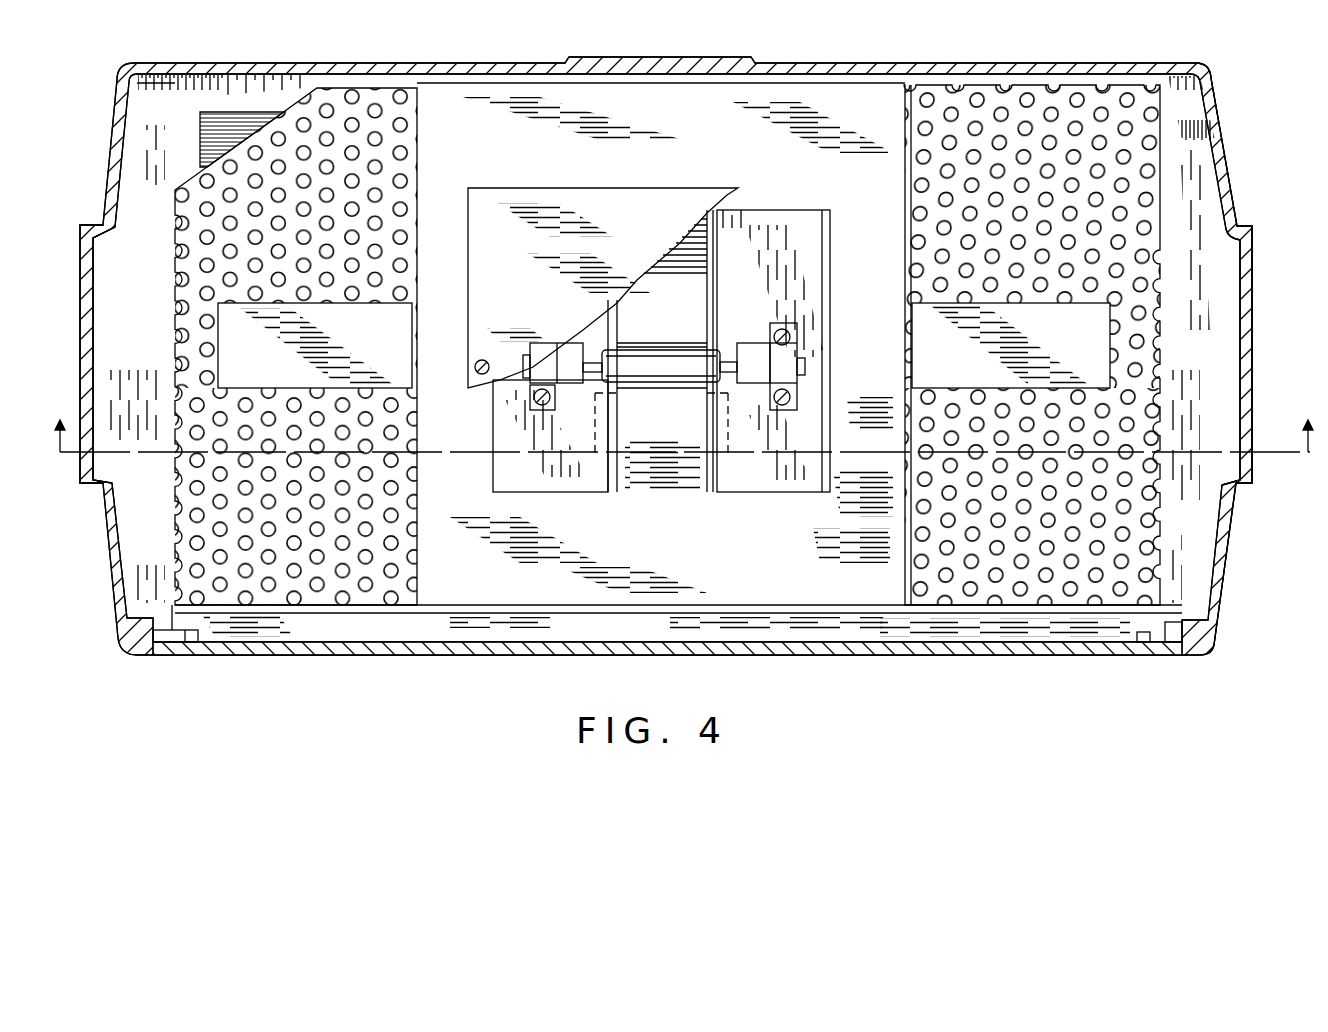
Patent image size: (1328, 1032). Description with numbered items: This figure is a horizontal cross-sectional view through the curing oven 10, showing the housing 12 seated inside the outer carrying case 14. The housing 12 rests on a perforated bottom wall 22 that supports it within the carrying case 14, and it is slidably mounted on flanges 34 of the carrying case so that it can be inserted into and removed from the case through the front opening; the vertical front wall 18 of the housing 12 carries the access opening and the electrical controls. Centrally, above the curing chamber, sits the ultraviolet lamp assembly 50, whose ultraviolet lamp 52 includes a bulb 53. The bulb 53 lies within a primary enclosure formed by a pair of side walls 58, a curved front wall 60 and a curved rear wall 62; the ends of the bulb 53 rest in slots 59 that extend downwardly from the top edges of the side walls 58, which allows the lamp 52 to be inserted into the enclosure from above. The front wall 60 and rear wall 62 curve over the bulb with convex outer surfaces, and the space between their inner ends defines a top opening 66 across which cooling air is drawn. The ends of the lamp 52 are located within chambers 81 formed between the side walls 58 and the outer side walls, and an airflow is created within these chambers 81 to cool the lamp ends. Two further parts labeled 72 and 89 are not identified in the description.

The curing oven 10 is at (685, 362).
The housing 12 is at (823, 110).
The outer carrying case 14 is at (1236, 200).
The vertical front wall 18 is at (328, 616).
The perforated bottom wall 22 is at (178, 228).
The flanges 34 is at (135, 548).
The ultraviolet lamp assembly 50 is at (800, 238).
The ultraviolet lamp 52 is at (723, 315).
The bulb 53 is at (710, 362).
The side walls 58 is at (700, 483).
The slots 59 is at (610, 345).
The curved front wall 60 is at (695, 463).
The curved rear wall 62 is at (685, 275).
The top opening 66 is at (652, 347).
The cover plate 72 is at (530, 198).
The chambers 81 is at (822, 270).
The window 89 is at (235, 363).